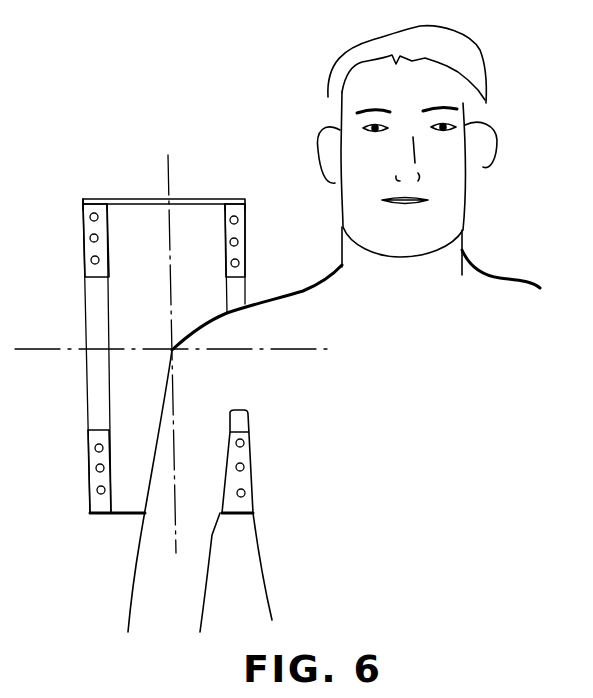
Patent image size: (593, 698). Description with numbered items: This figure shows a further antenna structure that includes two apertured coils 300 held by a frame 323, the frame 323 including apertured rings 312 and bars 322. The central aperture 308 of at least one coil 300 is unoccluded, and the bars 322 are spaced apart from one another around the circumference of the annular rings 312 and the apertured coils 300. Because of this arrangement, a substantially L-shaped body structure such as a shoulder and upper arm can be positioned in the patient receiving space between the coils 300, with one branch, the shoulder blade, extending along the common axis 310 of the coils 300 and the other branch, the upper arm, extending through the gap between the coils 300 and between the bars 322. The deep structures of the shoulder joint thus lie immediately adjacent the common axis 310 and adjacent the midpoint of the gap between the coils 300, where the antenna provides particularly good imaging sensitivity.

The apertured coil 300 is at (80, 235).
The central aperture 308 is at (230, 290).
The axis 310 is at (256, 347).
The apertured ring 312 is at (93, 205).
The bar 322 is at (117, 197).
The frame 323 is at (180, 190).